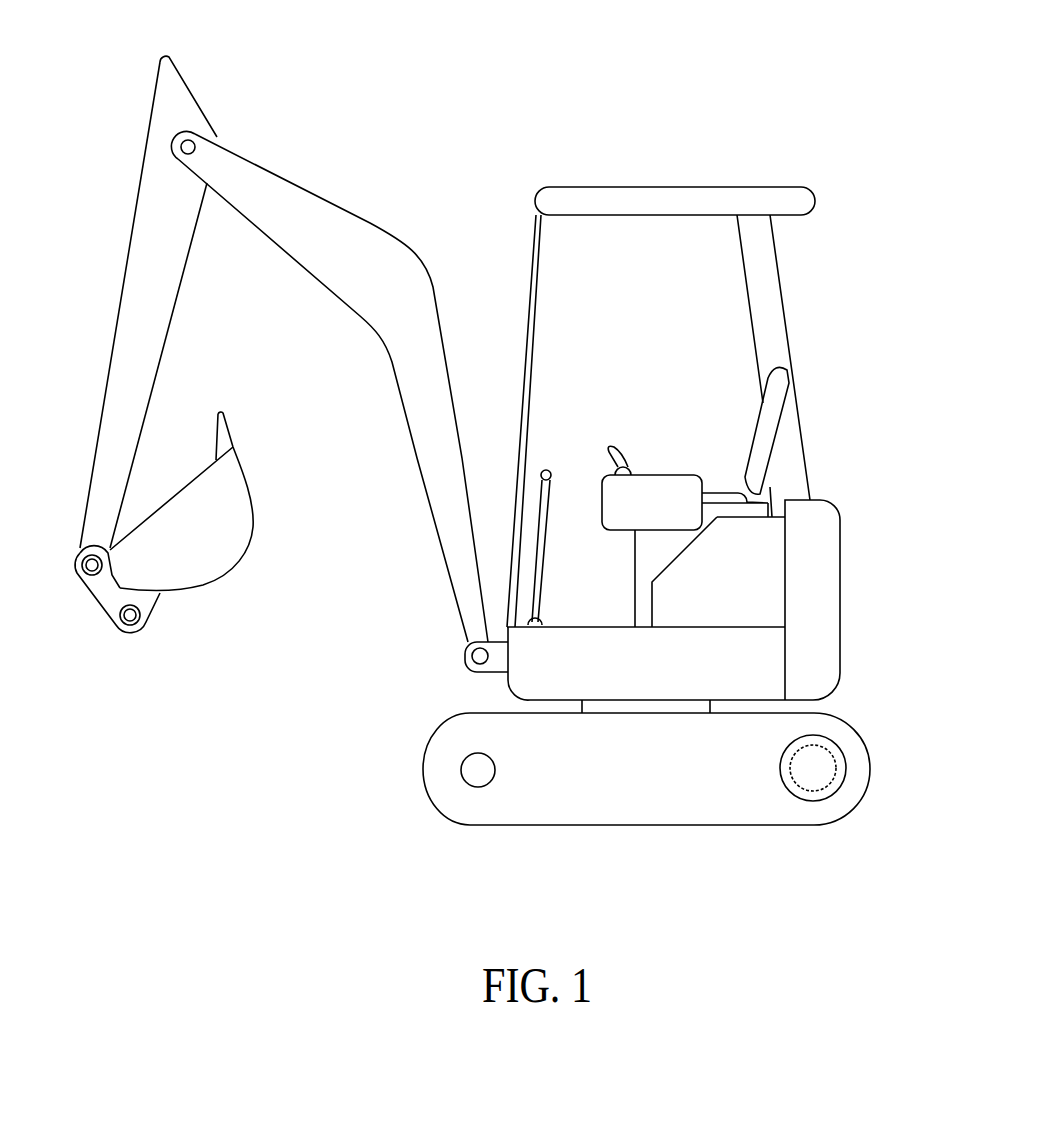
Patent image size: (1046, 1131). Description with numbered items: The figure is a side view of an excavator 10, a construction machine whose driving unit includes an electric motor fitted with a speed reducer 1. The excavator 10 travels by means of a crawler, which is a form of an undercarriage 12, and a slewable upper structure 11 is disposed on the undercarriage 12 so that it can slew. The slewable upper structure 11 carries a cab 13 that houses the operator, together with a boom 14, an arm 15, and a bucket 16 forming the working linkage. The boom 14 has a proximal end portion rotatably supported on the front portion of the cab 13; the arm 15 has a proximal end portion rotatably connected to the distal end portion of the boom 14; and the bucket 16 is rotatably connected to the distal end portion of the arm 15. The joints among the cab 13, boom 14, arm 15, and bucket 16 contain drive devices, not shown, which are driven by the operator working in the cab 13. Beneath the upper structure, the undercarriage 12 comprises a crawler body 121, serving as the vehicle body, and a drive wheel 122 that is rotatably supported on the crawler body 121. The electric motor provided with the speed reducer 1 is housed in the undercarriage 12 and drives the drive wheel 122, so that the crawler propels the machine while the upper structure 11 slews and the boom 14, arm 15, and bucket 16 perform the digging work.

The excavator 10 is at (752, 124).
The slewable upper structure 11 is at (846, 488).
The undercarriage 12 is at (424, 827).
The crawler body 121 is at (645, 780).
The drive wheel 122 is at (833, 740).
The speed reducer 1 is at (804, 803).
The cab 13 is at (787, 307).
The boom 14 is at (383, 230).
The arm 15 is at (157, 367).
The bucket 16 is at (203, 585).